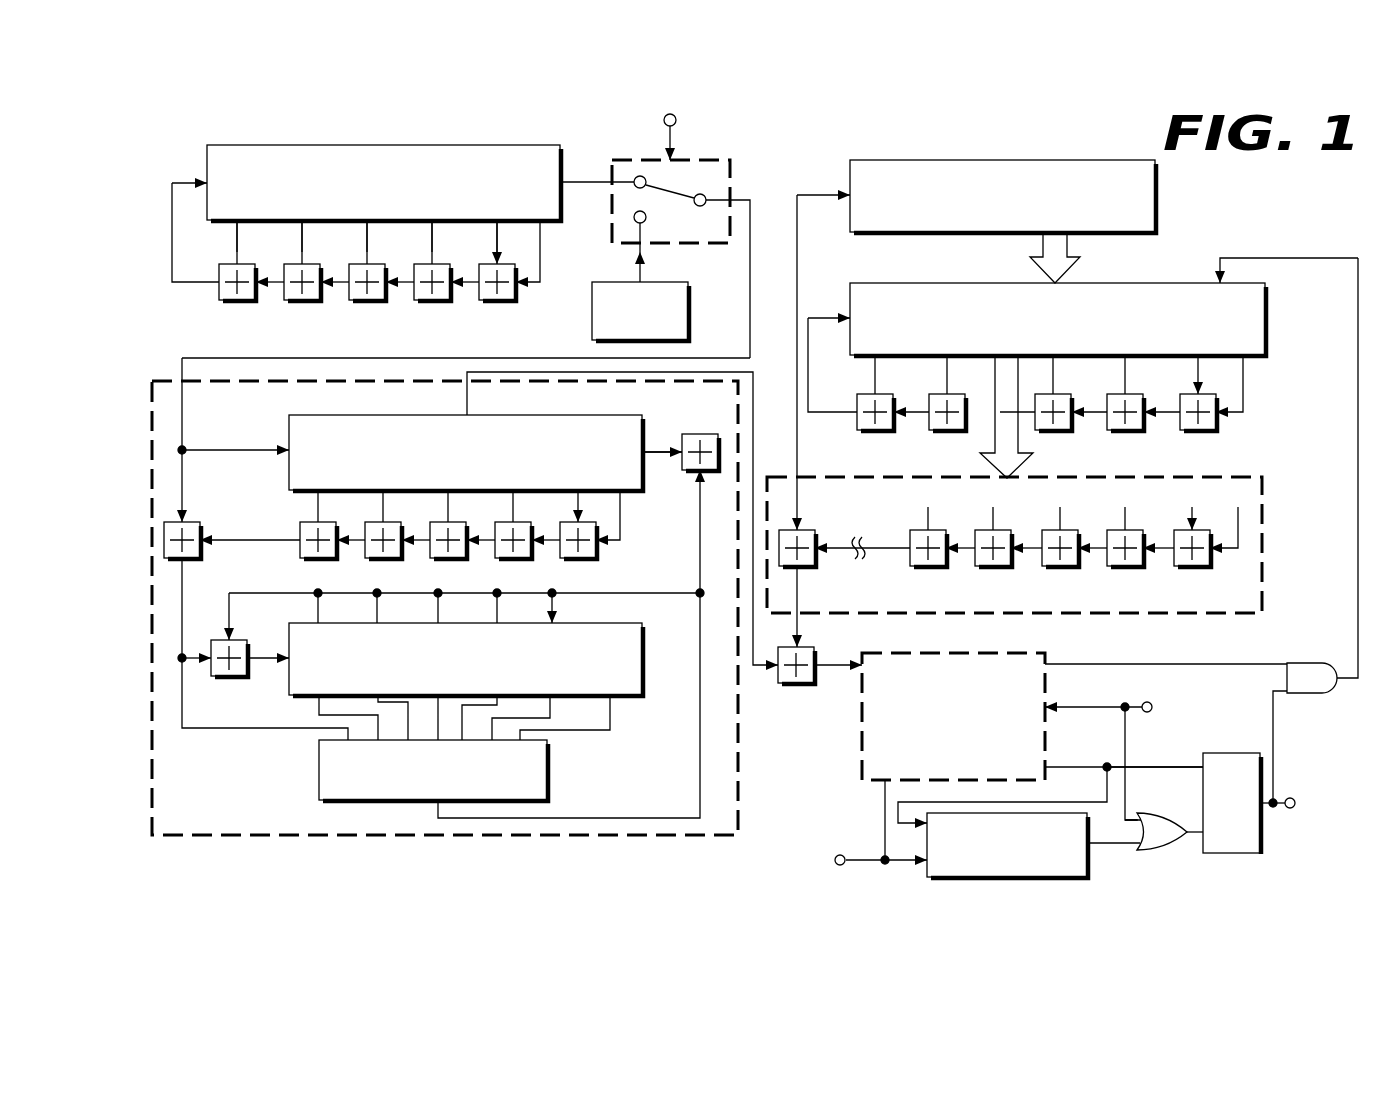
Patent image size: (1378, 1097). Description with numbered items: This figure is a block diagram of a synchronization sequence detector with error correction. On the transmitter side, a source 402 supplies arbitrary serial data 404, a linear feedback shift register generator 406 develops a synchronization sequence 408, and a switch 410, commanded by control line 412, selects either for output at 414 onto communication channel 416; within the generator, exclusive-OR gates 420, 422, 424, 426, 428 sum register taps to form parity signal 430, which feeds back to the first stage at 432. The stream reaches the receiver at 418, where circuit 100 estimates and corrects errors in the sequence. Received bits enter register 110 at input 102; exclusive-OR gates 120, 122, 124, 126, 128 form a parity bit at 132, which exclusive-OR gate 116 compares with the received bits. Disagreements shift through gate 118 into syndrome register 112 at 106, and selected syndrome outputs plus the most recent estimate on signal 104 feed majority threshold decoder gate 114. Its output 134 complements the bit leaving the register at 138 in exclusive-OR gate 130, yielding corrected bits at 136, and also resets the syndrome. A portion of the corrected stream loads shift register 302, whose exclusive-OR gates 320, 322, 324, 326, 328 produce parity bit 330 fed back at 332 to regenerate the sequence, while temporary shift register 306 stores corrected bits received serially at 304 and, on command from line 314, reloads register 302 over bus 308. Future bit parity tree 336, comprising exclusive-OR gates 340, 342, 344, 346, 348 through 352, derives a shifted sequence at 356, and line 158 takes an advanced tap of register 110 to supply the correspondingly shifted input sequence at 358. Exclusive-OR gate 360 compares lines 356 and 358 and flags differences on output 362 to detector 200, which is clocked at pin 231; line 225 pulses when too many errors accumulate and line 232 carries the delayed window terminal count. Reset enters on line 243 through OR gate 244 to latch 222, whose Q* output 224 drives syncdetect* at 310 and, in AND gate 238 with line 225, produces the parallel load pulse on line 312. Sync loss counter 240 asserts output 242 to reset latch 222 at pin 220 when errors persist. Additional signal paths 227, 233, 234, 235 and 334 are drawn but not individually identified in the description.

The circuit 100 is at (225, 835).
The input 102 is at (278, 446).
The signal 104 is at (182, 580).
The syndrome register input 106 is at (278, 655).
The open loop register 110 is at (575, 415).
The syndrome register 112 is at (643, 697).
The majority threshold decoder gate 114 is at (319, 790).
The exclusive-OR gate 116 is at (200, 524).
The gate 118 is at (229, 676).
The exclusive-OR gate 120 is at (560, 558).
The exclusive-OR gate 122 is at (495, 558).
The exclusive-OR gate 124 is at (430, 558).
The exclusive-OR gate 126 is at (365, 558).
The exclusive-OR gate 128 is at (300, 558).
The exclusive-OR gate 130 is at (700, 430).
The parity bit 132 is at (272, 540).
The output 134 is at (672, 593).
The corrected bits 136 is at (800, 245).
The register output 138 is at (655, 455).
The line 158 is at (467, 398).
The synchronization detector 200 is at (862, 748).
The pin 220 is at (1193, 838).
The sync detect latch 222 is at (1240, 753).
The Q* output 224 is at (1268, 815).
The line 225 is at (1048, 660).
The reset line 227 is at (1068, 703).
The pin 231 is at (885, 788).
The line 232 is at (1048, 763).
The clock input 233 is at (875, 858).
The line 234 is at (1190, 764).
The line 235 is at (898, 802).
The AND gate 238 is at (1310, 662).
The sync loss counter 240 is at (1088, 868).
The output 242 is at (1150, 850).
The line 243 is at (1127, 728).
The OR gate 244 is at (1148, 813).
The shift register 302 is at (880, 283).
The serial input 304 is at (843, 190).
The temporary shift register 306 is at (1155, 178).
The bus 308 is at (1043, 250).
The syncdetect* signal 310 is at (1296, 803).
The line 312 is at (1355, 566).
The line 314 is at (1216, 262).
The exclusive-OR gate 320 is at (1180, 430).
The exclusive-OR gate 322 is at (1108, 430).
The exclusive-OR gate 324 is at (1060, 395).
The exclusive-OR gate 326 is at (930, 430).
The exclusive-OR gate 328 is at (858, 428).
The parity bit 330 is at (808, 392).
The feedback input 332 is at (845, 312).
The transfer path 334 is at (985, 455).
The future bit parity tree 336 is at (1190, 477).
The exclusive-OR gate 340 is at (1192, 566).
The exclusive-OR gate 342 is at (1125, 566).
The exclusive-OR gate 344 is at (1060, 566).
The exclusive-OR gate 346 is at (993, 566).
The exclusive-OR gate 348 is at (928, 566).
The exclusive-OR gate 352 is at (812, 530).
The shifted sequence 356 is at (800, 598).
The shifted input sequence 358 is at (748, 556).
The exclusive-OR gate 360 is at (796, 683).
The output 362 is at (845, 672).
The source 402 is at (592, 318).
The serial data 404 is at (636, 270).
The generator 406 is at (488, 145).
The synchronization sequence 408 is at (588, 182).
The switch 410 is at (730, 165).
The control line 412 is at (667, 136).
The output 414 is at (756, 190).
The communication channel 416 is at (750, 272).
The receiver input 418 is at (750, 338).
The exclusive-OR gate 420 is at (485, 300).
The exclusive-OR gate 422 is at (420, 300).
The exclusive-OR gate 424 is at (355, 300).
The exclusive-OR gate 426 is at (290, 300).
The exclusive-OR gate 428 is at (222, 298).
The parity signal 430 is at (200, 283).
The feedback input 432 is at (190, 180).